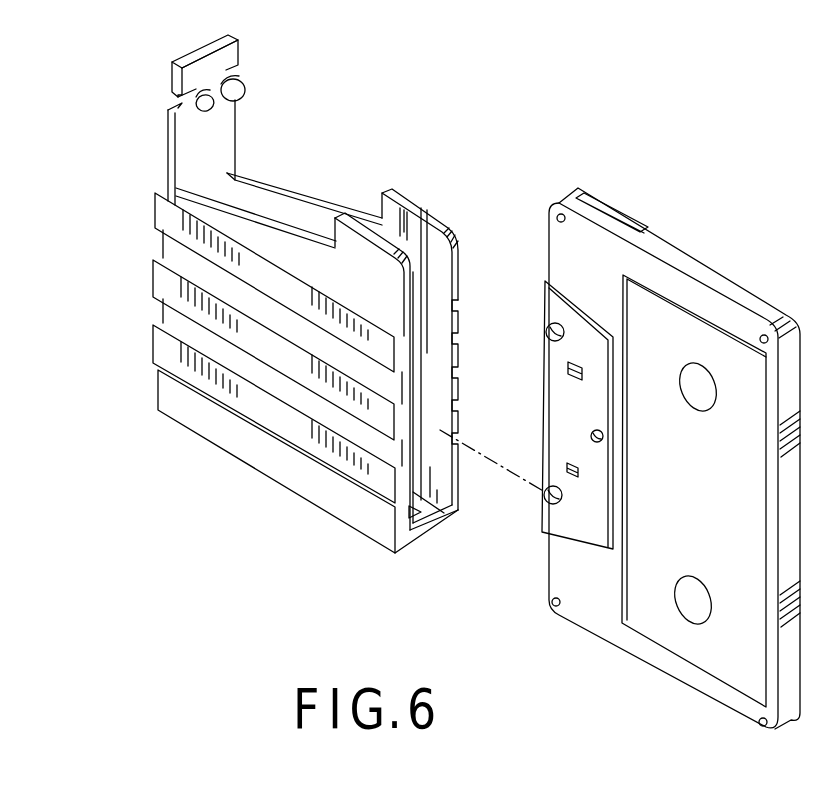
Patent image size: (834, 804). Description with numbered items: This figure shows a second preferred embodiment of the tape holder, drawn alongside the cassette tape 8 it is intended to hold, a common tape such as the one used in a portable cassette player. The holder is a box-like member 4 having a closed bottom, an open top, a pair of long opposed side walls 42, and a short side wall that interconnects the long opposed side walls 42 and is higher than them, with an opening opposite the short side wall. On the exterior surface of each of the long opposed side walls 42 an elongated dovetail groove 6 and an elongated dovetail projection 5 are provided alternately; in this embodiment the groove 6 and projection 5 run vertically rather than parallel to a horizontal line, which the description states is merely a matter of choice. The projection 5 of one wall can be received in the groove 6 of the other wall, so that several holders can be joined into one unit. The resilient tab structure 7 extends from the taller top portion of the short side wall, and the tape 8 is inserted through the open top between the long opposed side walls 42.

The box-like member 4 is at (193, 451).
The elongated dovetail projection 5 is at (146, 266).
The elongated dovetail groove 6 is at (464, 386).
The hook bracket 7 is at (162, 101).
The cassette tape 8 is at (717, 271).
The long opposed side walls 42 is at (428, 192).